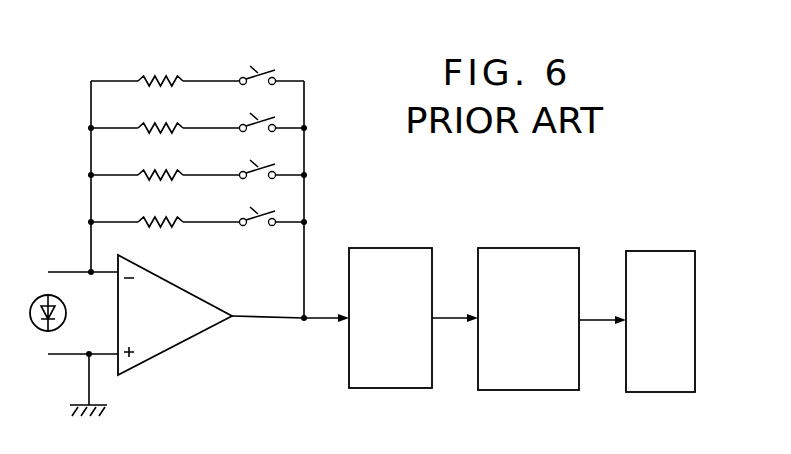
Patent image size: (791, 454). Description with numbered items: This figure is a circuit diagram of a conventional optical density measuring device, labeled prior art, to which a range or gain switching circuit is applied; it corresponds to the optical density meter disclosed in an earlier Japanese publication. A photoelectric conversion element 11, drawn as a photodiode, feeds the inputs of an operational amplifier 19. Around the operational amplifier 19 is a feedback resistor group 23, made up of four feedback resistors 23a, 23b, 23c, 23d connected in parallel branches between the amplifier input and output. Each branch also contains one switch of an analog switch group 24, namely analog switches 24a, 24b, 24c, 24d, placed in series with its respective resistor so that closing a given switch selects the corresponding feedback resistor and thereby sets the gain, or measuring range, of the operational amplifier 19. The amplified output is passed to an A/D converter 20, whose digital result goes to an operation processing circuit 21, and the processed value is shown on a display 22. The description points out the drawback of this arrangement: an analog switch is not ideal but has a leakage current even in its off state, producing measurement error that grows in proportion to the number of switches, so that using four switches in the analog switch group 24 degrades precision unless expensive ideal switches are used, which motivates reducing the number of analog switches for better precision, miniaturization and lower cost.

The photoelectric conversion element 11 is at (31, 322).
The operational amplifier 19 is at (184, 342).
The A/D converter 20 is at (388, 248).
The operation processing circuit 21 is at (528, 248).
The display 22 is at (660, 251).
The feedback resistor group 23 is at (177, 32).
The feedback resistor 23a is at (160, 209).
The feedback resistor 23b is at (160, 162).
The feedback resistor 23c is at (160, 115).
The feedback resistor 23d is at (160, 68).
The analog switch group 24 is at (243, 32).
The analog switch 24a is at (241, 209).
The analog switch 24b is at (241, 162).
The analog switch 24c is at (241, 115).
The analog switch 24d is at (241, 68).